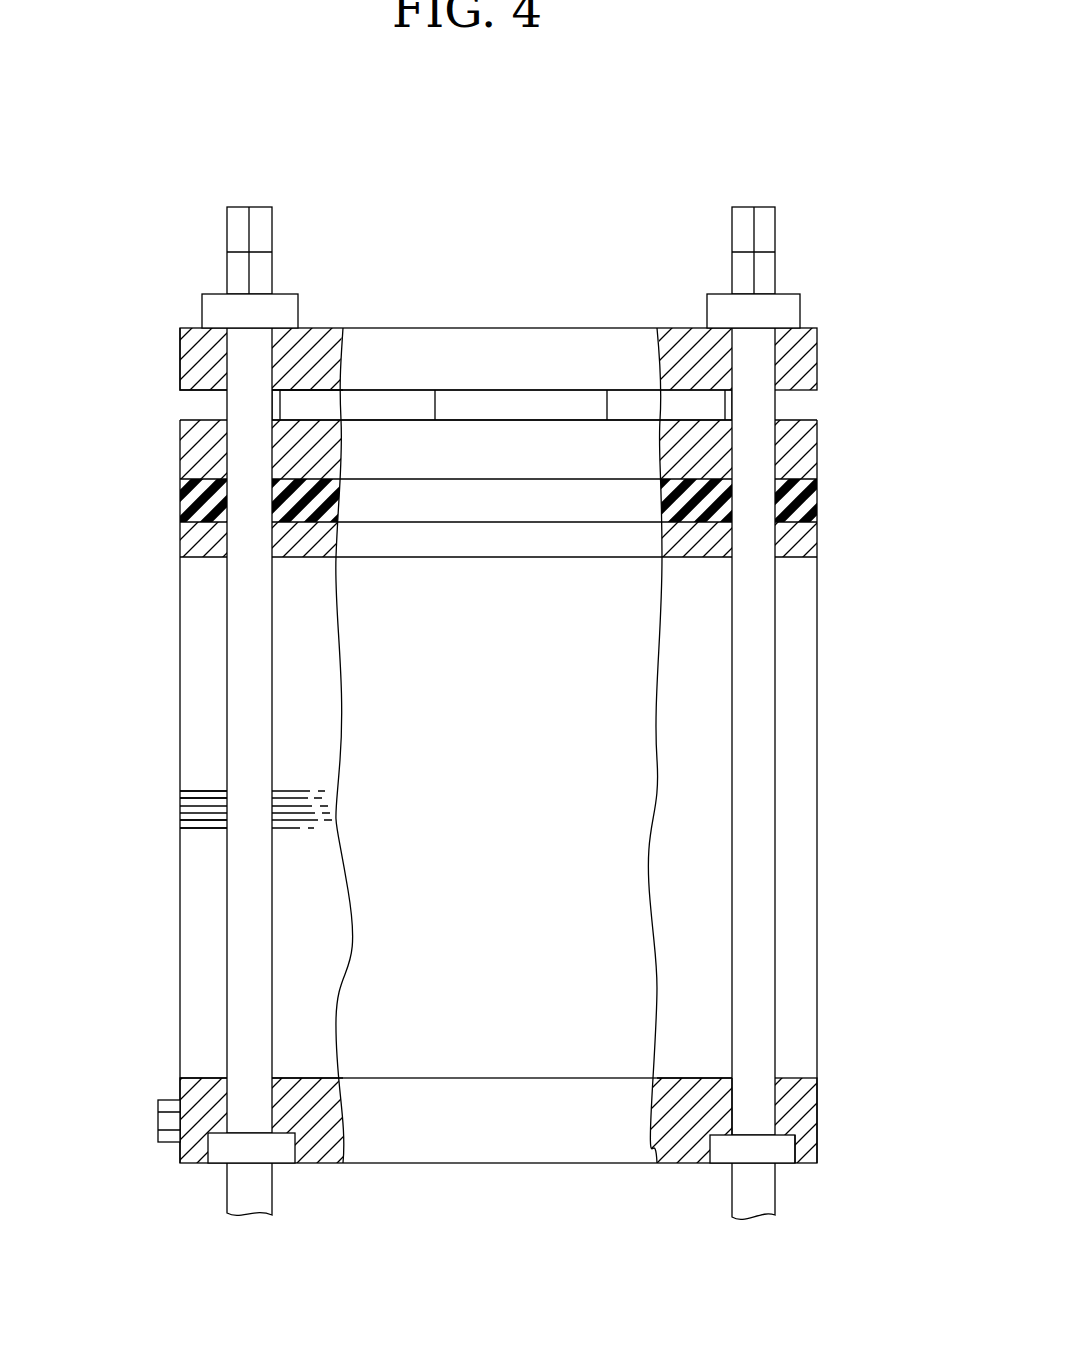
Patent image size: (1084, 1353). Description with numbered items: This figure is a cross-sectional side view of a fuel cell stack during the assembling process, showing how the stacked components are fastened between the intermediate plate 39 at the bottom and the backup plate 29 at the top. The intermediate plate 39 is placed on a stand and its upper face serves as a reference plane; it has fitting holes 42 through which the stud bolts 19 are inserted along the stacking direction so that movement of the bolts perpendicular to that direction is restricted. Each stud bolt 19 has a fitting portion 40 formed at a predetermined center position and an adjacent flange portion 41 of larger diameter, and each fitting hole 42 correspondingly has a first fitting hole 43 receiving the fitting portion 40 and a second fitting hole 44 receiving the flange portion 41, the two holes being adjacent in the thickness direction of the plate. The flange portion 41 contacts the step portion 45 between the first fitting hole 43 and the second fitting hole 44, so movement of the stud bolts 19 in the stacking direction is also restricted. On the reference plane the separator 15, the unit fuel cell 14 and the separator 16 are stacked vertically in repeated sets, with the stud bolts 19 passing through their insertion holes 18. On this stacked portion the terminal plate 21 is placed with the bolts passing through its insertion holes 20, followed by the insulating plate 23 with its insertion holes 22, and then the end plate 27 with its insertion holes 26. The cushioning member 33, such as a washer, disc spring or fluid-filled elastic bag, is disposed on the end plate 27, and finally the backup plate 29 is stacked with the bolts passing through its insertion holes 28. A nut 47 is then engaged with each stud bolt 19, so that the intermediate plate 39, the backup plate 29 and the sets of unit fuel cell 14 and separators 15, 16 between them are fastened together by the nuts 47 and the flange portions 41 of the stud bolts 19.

The unit fuel cell 14 is at (180, 810).
The separator 15 is at (180, 800).
The separator 16 is at (180, 818).
The insertion holes 18 is at (275, 808).
The stud bolt 19 is at (238, 1217).
The insertion holes 20 is at (775, 574).
The terminal plate 21 is at (835, 540).
The insertion holes 22 is at (218, 502).
The insulating plate 23 is at (168, 482).
The insertion holes 26 is at (774, 492).
The end plate 27 is at (833, 449).
The insertion holes 28 is at (218, 376).
The backup plate 29 is at (168, 350).
The cushioning member 33 is at (380, 400).
The intermediate plate 39 is at (835, 1124).
The fitting portion 40 is at (274, 1118).
The flange portion 41 is at (282, 1157).
The fitting hole 42 is at (746, 1119).
The first fitting hole 43 is at (734, 1104).
The second fitting hole 44 is at (714, 1162).
The step portion 45 is at (785, 1137).
The nut 47 is at (207, 317).